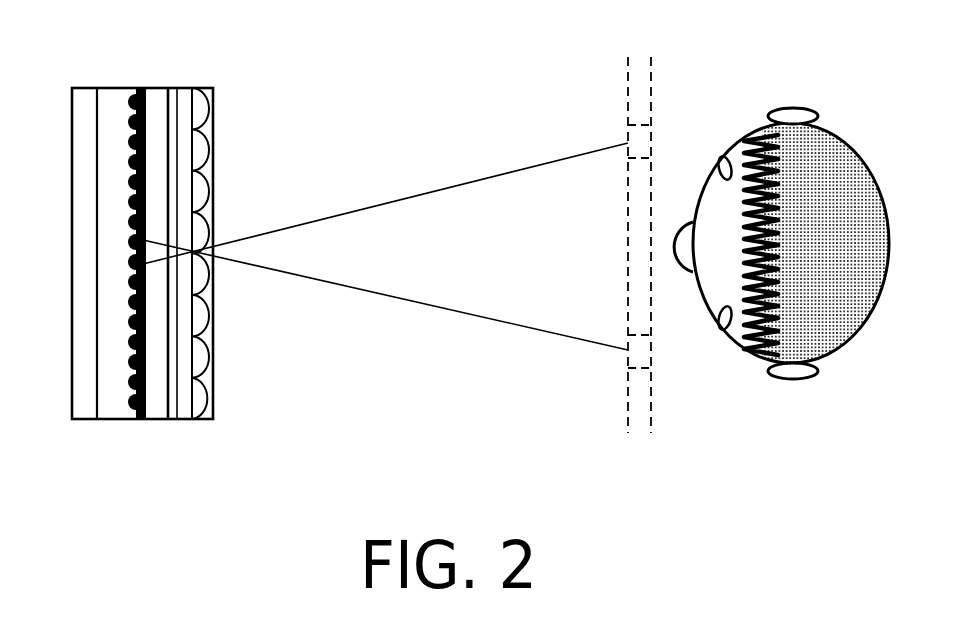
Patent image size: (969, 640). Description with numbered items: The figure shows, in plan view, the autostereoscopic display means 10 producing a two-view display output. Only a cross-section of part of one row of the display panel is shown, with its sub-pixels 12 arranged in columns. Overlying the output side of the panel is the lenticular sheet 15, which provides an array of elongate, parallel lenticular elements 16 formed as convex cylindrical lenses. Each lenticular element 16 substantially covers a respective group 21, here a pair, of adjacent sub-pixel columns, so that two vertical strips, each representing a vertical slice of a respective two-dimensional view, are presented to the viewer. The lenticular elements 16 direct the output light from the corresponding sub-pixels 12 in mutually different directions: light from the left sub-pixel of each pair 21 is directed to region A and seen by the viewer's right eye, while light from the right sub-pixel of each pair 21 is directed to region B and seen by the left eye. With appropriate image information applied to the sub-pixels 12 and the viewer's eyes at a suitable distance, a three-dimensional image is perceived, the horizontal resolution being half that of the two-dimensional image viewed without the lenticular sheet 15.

The autostereoscopic display means 10 is at (148, 433).
The sub-pixels 12 is at (134, 193).
The lenticular sheet 15 is at (222, 433).
The lenticular elements 16 is at (211, 112).
The group of adjacent sub-pixel columns 21 is at (130, 130).
The region A is at (643, 142).
The region B is at (643, 350).